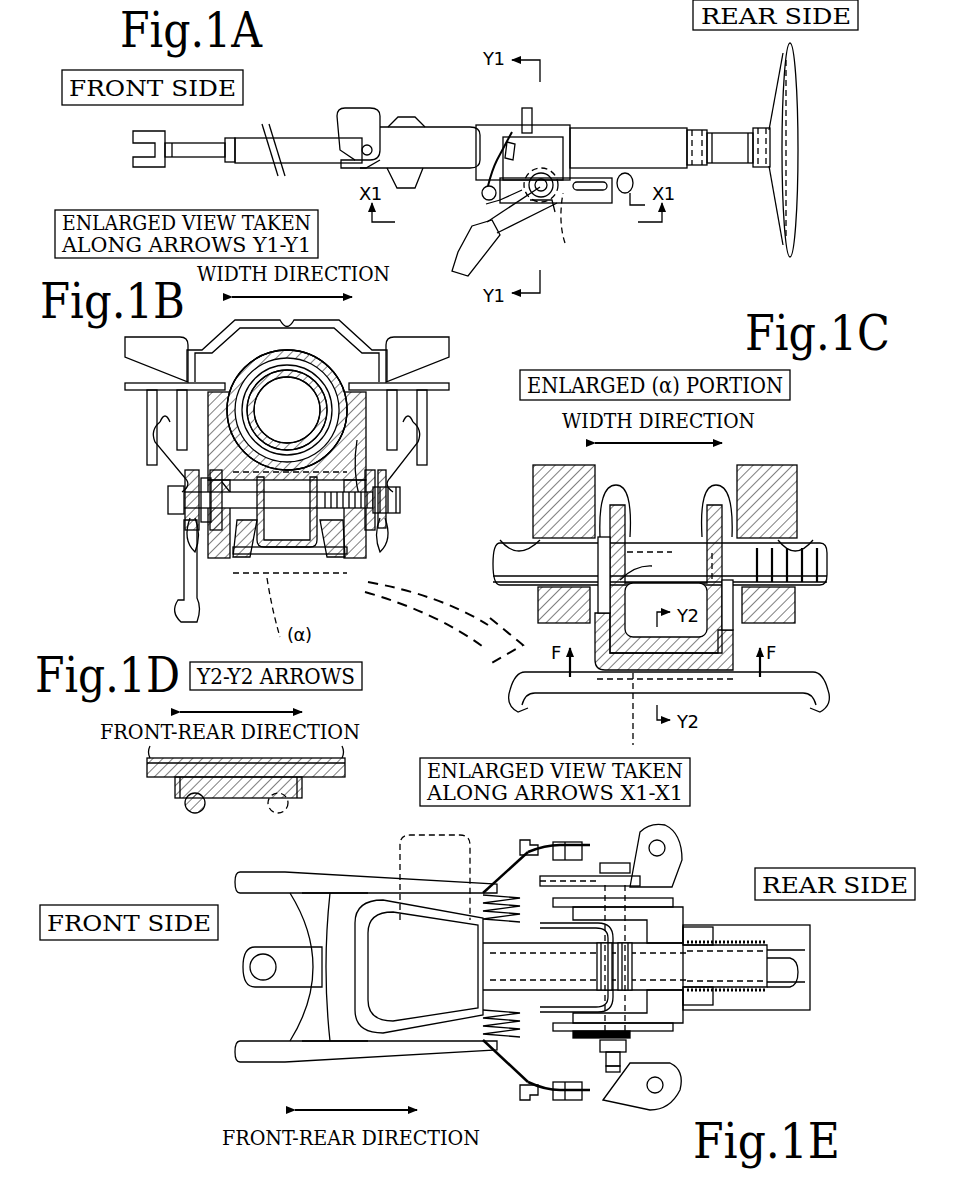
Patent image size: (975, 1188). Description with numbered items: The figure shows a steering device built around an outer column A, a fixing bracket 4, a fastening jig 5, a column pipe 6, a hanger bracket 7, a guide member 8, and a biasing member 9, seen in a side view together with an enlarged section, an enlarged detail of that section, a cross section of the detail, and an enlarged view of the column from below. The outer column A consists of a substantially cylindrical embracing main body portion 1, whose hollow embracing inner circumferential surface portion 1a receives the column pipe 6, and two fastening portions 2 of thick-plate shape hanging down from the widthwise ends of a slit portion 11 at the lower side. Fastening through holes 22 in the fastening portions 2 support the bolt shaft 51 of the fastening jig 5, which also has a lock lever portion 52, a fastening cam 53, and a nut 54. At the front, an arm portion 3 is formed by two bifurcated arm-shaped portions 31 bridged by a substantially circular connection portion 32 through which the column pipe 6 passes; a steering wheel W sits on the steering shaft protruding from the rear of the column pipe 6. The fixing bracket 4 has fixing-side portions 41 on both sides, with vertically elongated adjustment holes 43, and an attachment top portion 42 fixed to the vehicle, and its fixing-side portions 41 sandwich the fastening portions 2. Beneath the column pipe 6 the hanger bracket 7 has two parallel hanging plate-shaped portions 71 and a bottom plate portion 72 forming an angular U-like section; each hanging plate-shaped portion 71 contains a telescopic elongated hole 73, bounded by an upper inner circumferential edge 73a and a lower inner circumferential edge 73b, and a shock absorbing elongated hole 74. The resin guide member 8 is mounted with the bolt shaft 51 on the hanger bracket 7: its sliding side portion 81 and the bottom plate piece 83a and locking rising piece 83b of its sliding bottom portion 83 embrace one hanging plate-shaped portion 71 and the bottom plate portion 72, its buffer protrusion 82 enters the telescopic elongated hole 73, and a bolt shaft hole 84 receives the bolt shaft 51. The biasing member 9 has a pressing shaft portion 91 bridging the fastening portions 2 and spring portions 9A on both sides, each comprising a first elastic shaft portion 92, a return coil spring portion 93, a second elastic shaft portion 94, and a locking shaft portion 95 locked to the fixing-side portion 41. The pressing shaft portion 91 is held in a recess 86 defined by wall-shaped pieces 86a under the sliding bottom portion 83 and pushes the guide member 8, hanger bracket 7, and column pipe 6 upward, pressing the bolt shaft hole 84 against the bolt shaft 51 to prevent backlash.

In FIG. 1A, the embracing main body portion 1 is at (507, 118).
In FIG. 1B, the embracing main body portion 1 is at (247, 367).
In FIG. 1B, the embracing inner circumferential surface portion 1a is at (303, 403).
In FIG. 1B, the fastening portion 2 is at (245, 560).
In FIG. 1C, the fastening portion 2 is at (528, 489).
In FIG. 1E, the fastening portion 2 is at (695, 1005).
In FIG. 1A, the arm portion 3 is at (437, 130).
In FIG. 1E, the arm portion 3 is at (330, 870).
In FIG. 1A, the arm-shaped portion 31 is at (386, 134).
In FIG. 1E, the arm-shaped portion 31 is at (432, 890).
In FIG. 1A, the connection portion 32 is at (408, 116).
In FIG. 1E, the connection portion 32 is at (312, 936).
In FIG. 1A, the fixing bracket 4 is at (553, 214).
In FIG. 1B, the fixing bracket 4 is at (374, 417).
In FIG. 1E, the fixing bracket 4 is at (688, 873).
In FIG. 1A, the fixing-side portion 41 is at (562, 158).
In FIG. 1B, the fixing-side portion 41 is at (220, 560).
In FIG. 1E, the fixing-side portion 41 is at (678, 905).
In FIG. 1A, the attachment top portion 42 is at (531, 110).
In FIG. 1B, the attachment top portion 42 is at (300, 330).
In FIG. 1B, the adjustment hole 43 is at (212, 522).
In FIG. 1A, the fastening jig 5 is at (505, 236).
In FIG. 1B, the fastening jig 5 is at (289, 504).
In FIG. 1C, the fastening jig 5 is at (490, 576).
In FIG. 1E, the fastening jig 5 is at (676, 1088).
In FIG. 1B, the bolt shaft 51 is at (402, 497).
In FIG. 1C, the bolt shaft 51 is at (520, 582).
In FIG. 1A, the lock lever portion 52 is at (472, 242).
In FIG. 1B, the lock lever portion 52 is at (176, 603).
In FIG. 1E, the lock lever portion 52 is at (400, 868).
In FIG. 1B, the fastening cam 53 is at (192, 520).
In FIG. 1E, the fastening cam 53 is at (675, 855).
In FIG. 1B, the nut 54 is at (388, 525).
In FIG. 1E, the nut 54 is at (612, 1075).
In FIG. 1A, the column pipe 6 is at (622, 137).
In FIG. 1B, the column pipe 6 is at (270, 367).
In FIG. 1E, the column pipe 6 is at (710, 927).
In FIG. 1A, the hanger bracket 7 is at (561, 215).
In FIG. 1B, the hanger bracket 7 is at (298, 557).
In FIG. 1C, the hanger bracket 7 is at (792, 600).
In FIG. 1D, the hanger bracket 7 is at (350, 766).
In FIG. 1E, the hanger bracket 7 is at (760, 990).
In FIG. 1C, the hanging plate-shaped portion 71 is at (620, 488).
In FIG. 1C, the bottom plate portion 72 is at (645, 645).
In FIG. 1D, the bottom plate portion 72 is at (333, 775).
In FIG. 1E, the bottom plate portion 72 is at (730, 972).
In FIG. 1A, the telescopic elongated hole 73 is at (547, 218).
In FIG. 1C, the telescopic elongated hole 73 is at (604, 537).
In FIG. 1C, the upper inner circumferential edge 73a is at (627, 545).
In FIG. 1C, the lower inner circumferential edge 73b is at (624, 578).
In FIG. 1A, the shock absorbing elongated hole 74 is at (590, 190).
In FIG. 1A, the guide member 8 is at (571, 224).
In FIG. 1B, the guide member 8 is at (262, 555).
In FIG. 1C, the guide member 8 is at (615, 675).
In FIG. 1D, the guide member 8 is at (307, 790).
In FIG. 1E, the guide member 8 is at (634, 964).
In FIG. 1C, the sliding side portion 81 is at (605, 566).
In FIG. 1C, the buffer protrusion 82 is at (647, 568).
In FIG. 1C, the sliding bottom portion 83 is at (718, 680).
In FIG. 1D, the sliding bottom portion 83 is at (180, 789).
In FIG. 1E, the sliding bottom portion 83 is at (597, 964).
In FIG. 1C, the bottom plate piece 83a is at (712, 690).
In FIG. 1C, the locking rising piece 83b is at (733, 685).
In FIG. 1C, the bolt shaft hole 84 is at (662, 556).
In FIG. 1C, the recess 86 is at (633, 715).
In FIG. 1D, the recess 86 is at (265, 800).
In FIG. 1E, the recess 86 is at (632, 973).
In FIG. 1D, the wall-shaped piece 86a is at (185, 805).
In FIG. 1B, the biasing member 9 is at (330, 556).
In FIG. 1C, the biasing member 9 is at (666, 725).
In FIG. 1D, the biasing member 9 is at (190, 812).
In FIG. 1E, the biasing member 9 is at (576, 967).
In FIG. 1A, the spring portion 9A is at (470, 184).
In FIG. 1B, the spring portion 9A is at (158, 460).
In FIG. 1C, the spring portion 9A is at (515, 705).
In FIG. 1E, the spring portion 9A is at (518, 868).
In FIG. 1B, the pressing shaft portion 91 is at (283, 560).
In FIG. 1C, the pressing shaft portion 91 is at (588, 690).
In FIG. 1E, the pressing shaft portion 91 is at (598, 969).
In FIG. 1A, the first elastic shaft portion 92 is at (495, 208).
In FIG. 1E, the first elastic shaft portion 92 is at (583, 878).
In FIG. 1A, the return coil spring portion 93 is at (482, 194).
In FIG. 1B, the return coil spring portion 93 is at (192, 545).
In FIG. 1E, the return coil spring portion 93 is at (483, 920).
In FIG. 1A, the second elastic shaft portion 94 is at (483, 165).
In FIG. 1E, the second elastic shaft portion 94 is at (495, 862).
In FIG. 1A, the locking shaft portion 95 is at (516, 145).
In FIG. 1B, the locking shaft portion 95 is at (160, 430).
In FIG. 1E, the locking shaft portion 95 is at (558, 845).
In FIG. 1B, the slit portion 11 is at (387, 463).
In FIG. 1C, the slit portion 11 is at (745, 515).
In FIG. 1B, the fastening through hole 22 is at (225, 490).
In FIG. 1C, the fastening through hole 22 is at (521, 548).
In FIG. 1A, the outer column A is at (563, 122).
In FIG. 1B, the outer column A is at (322, 362).
In FIG. 1C, the outer column A is at (765, 462).
In FIG. 1A, the steering wheel W is at (783, 245).